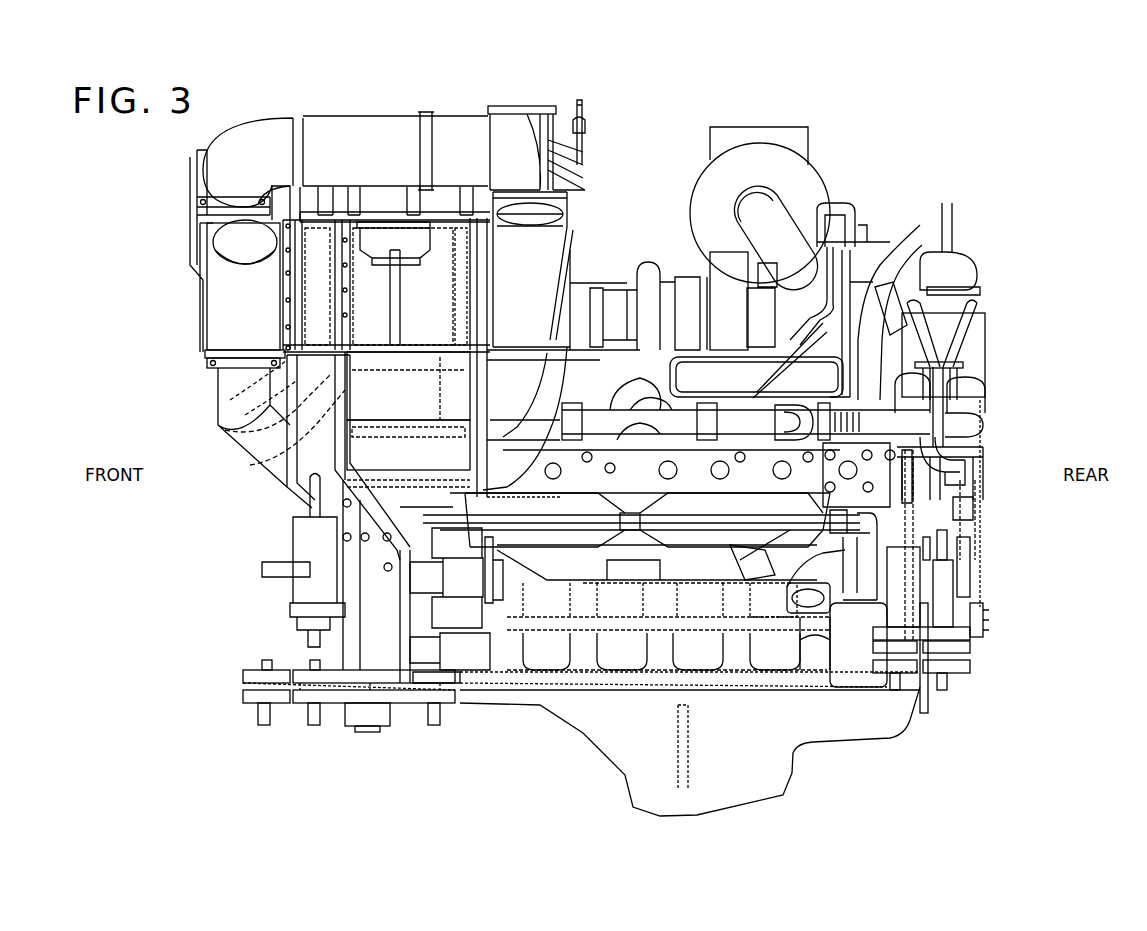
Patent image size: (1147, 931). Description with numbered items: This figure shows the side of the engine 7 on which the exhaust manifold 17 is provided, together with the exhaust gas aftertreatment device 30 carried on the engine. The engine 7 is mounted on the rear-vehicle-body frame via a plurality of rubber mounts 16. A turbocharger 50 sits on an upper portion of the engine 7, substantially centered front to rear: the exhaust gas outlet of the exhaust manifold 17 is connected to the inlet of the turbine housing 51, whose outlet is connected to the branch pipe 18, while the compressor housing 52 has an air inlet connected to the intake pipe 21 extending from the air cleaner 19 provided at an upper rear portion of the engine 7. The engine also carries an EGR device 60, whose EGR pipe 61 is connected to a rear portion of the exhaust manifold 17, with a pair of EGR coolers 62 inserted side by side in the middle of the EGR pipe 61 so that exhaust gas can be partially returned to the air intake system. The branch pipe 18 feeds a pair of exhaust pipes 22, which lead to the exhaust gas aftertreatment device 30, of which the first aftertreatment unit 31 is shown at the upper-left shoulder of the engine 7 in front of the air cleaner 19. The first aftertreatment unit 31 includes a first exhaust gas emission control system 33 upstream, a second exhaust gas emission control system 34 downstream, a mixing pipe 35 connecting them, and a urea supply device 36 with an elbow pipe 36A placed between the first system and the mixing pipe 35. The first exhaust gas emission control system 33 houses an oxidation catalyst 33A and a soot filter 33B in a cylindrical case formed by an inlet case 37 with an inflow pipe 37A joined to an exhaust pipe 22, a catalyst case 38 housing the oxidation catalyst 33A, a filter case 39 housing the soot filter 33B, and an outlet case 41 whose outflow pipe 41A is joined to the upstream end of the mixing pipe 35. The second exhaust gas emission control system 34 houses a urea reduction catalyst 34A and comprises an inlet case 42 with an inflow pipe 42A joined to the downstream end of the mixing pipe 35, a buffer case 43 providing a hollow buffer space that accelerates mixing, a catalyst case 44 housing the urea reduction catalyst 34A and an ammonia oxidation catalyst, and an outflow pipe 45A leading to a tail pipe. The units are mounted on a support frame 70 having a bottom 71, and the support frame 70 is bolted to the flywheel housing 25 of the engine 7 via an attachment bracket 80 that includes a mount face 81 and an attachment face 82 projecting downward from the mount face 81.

The engine 7 is at (921, 128).
The rubber mount 16 is at (300, 705).
The exhaust manifold 17 is at (668, 432).
The branch pipe 18 is at (548, 455).
The air cleaner 19 is at (815, 178).
The intake pipe 21 is at (745, 195).
The exhaust pipe 22 is at (345, 455).
The flywheel housing 25 is at (425, 440).
The exhaust gas aftertreatment device 30 is at (463, 108).
The first aftertreatment unit 31 is at (175, 301).
The first exhaust gas emission control system 33 is at (207, 313).
The oxidation catalyst 33A is at (290, 290).
The soot filter 33B is at (475, 312).
The second exhaust gas emission control system 34 is at (283, 182).
The urea reduction catalyst 34A is at (370, 205).
The mixing pipe 35 is at (385, 120).
The urea supply device 36 is at (590, 152).
The elbow pipe 36A is at (520, 125).
The inlet case 37 is at (207, 350).
The inflow pipe 37A is at (260, 370).
The catalyst case 38 is at (243, 395).
The filter case 39 is at (475, 272).
The outlet case 41 is at (565, 250).
The outflow pipe 41A is at (568, 218).
The inlet case 42 is at (225, 220).
The inflow pipe 42A is at (220, 235).
The buffer case 43 is at (308, 200).
The catalyst case 44 is at (440, 215).
The outflow pipe 45A is at (580, 112).
The turbocharger 50 is at (675, 236).
The turbine housing 51 is at (648, 262).
The compressor housing 52 is at (725, 252).
The EGR device 60 is at (1013, 332).
The EGR pipe 61 is at (950, 432).
The EGR cooler 62 is at (965, 368).
The support frame 70 is at (375, 345).
The bottom 71 is at (433, 345).
The attachment bracket 80 is at (262, 440).
The mount face 81 is at (407, 357).
The attachment face 82 is at (272, 460).